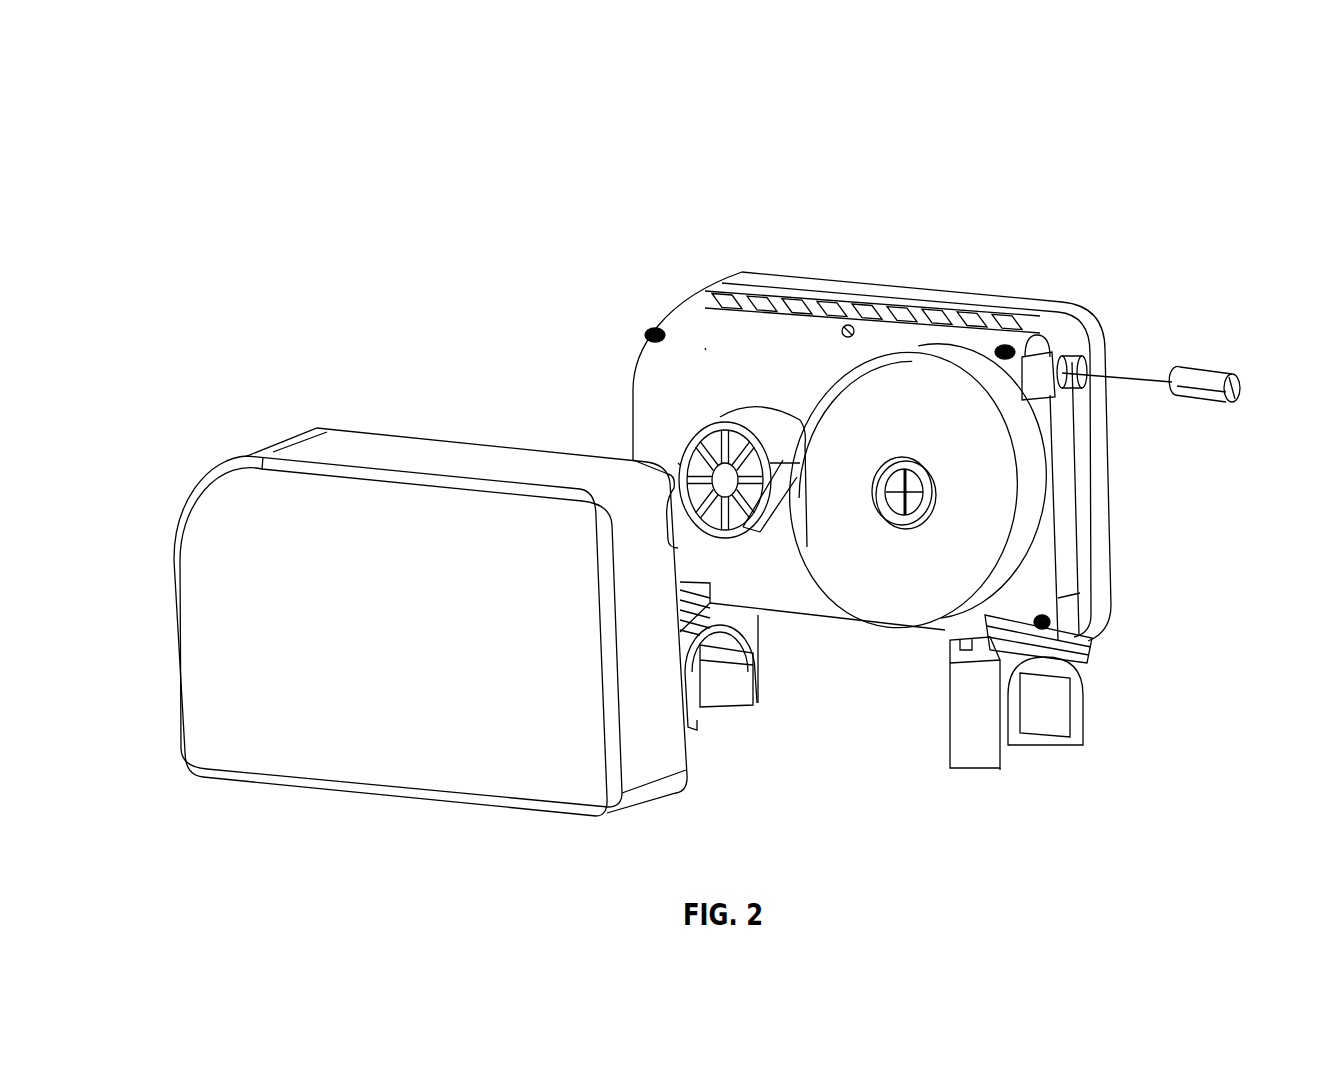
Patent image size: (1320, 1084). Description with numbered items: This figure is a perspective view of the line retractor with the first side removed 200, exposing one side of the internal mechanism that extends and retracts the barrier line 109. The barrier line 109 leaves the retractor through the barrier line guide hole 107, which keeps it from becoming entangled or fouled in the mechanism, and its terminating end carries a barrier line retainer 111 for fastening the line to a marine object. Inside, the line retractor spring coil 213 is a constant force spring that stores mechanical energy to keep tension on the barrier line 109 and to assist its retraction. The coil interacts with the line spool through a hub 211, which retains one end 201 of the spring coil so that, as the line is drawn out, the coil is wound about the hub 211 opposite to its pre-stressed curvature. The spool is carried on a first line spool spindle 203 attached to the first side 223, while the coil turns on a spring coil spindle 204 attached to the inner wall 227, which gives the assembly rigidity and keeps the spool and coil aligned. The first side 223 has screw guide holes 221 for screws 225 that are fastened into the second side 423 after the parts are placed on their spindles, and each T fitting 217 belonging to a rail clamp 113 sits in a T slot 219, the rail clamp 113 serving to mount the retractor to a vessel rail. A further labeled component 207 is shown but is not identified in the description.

The line retractor with the first side removed 200 is at (354, 260).
The barrier line guide hole 107 is at (1073, 355).
The barrier line 109 is at (1123, 373).
The barrier line retainer 111 is at (1200, 400).
The rail clamp 113 is at (960, 735).
The one end of the line retractor spring coil 201 is at (780, 497).
The first line spool spindle 203 is at (680, 465).
The spring coil spindle 204 is at (903, 513).
The screw 207 is at (850, 324).
The hub 211 is at (693, 437).
The line retractor spring coil 213 is at (921, 597).
The T fitting 217 is at (987, 770).
The T slot 219 is at (990, 620).
The screw guide holes 221 is at (657, 331).
The first side 223 is at (957, 300).
The screws 225 is at (650, 333).
The inner wall 227 is at (705, 348).
The second side 423 is at (318, 663).